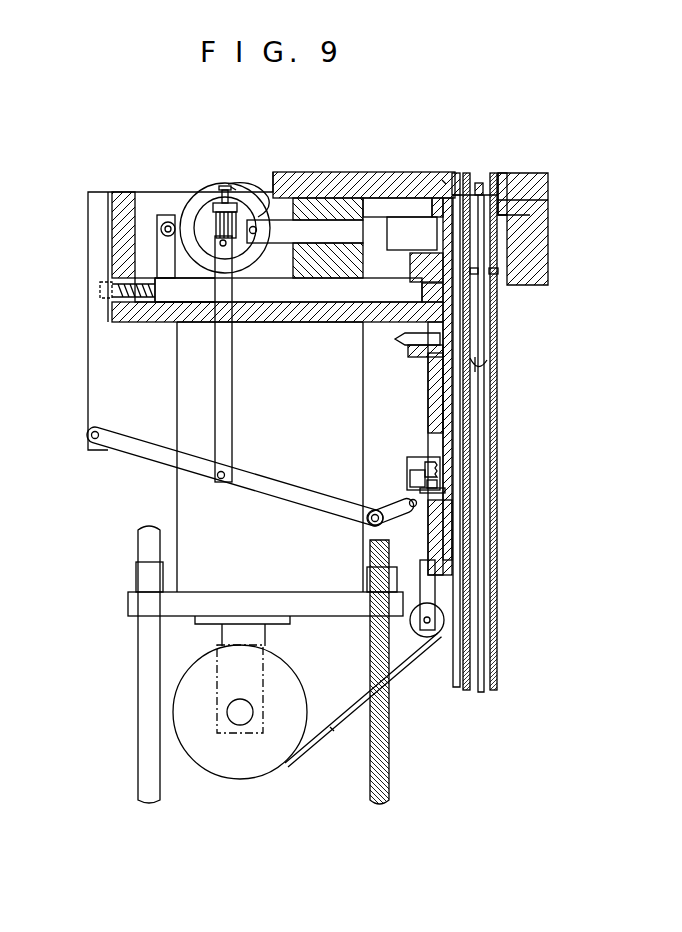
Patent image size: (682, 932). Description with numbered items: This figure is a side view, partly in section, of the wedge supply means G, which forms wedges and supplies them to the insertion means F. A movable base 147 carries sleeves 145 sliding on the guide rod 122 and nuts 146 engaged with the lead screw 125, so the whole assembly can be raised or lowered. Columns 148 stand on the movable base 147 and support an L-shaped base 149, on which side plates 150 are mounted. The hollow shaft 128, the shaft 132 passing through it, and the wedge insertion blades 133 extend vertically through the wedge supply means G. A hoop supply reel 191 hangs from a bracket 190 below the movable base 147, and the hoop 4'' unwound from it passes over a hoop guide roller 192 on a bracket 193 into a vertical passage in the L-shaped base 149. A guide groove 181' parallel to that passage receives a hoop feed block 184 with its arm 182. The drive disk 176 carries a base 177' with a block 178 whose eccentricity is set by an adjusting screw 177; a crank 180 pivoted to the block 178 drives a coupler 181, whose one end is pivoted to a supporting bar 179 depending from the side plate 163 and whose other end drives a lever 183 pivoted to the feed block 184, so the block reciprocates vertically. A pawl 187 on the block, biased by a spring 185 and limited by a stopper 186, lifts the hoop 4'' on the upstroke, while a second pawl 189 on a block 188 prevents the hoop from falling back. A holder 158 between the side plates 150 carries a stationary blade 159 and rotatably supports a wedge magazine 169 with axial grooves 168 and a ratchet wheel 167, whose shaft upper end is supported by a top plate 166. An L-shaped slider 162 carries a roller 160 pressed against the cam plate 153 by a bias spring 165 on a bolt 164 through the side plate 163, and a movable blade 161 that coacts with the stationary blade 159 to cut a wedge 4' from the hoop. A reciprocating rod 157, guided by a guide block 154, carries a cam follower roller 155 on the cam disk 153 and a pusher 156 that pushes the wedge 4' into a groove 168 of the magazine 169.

The guide rod 122 is at (143, 778).
The lead screw 125 is at (390, 773).
The hollow shaft 128 is at (492, 335).
The shaft 132 is at (487, 373).
The wedge insertion blade 133 is at (502, 304).
The sleeve 145 is at (140, 577).
The nut 146 is at (378, 580).
The movable base 147 is at (135, 600).
The column 148 is at (185, 492).
The L-shaped base 149 is at (305, 312).
The side plate 150 is at (150, 200).
The cam plate 153 is at (250, 190).
The guide block 154 is at (324, 195).
The cam follower roller 155 is at (257, 236).
The pusher 156 is at (397, 214).
The reciprocating rod 157 is at (352, 225).
The holder 158 is at (418, 270).
The stationary blade 159 is at (437, 246).
The roller 160 is at (170, 222).
The movable blade 161 is at (432, 293).
The L-shaped slider 162 is at (263, 312).
The side plate 163 is at (118, 210).
The bolt 164 is at (98, 290).
The bias spring 165 is at (150, 302).
The top plate 166 is at (428, 180).
The ratchet wheel 167 is at (505, 178).
The axial groove 168 is at (497, 173).
The wedge magazine 169 is at (488, 173).
The disk 176 is at (197, 212).
The adjusting screw 177 is at (211, 182).
The base 177' is at (236, 164).
The block 178 is at (213, 292).
The supporting bar 179 is at (97, 377).
The link or crank 180 is at (231, 405).
The coupler 181 is at (235, 476).
The guide groove 181' is at (489, 448).
The arm 182 is at (412, 512).
The lever 183 is at (395, 515).
The hoop feed block 184 is at (408, 467).
The spring 185 is at (425, 494).
The stopper 186 is at (432, 483).
The pawl 187 is at (428, 466).
The block 188 is at (420, 357).
The pawl 189 is at (400, 340).
The bracket 190 is at (268, 633).
The hoop supply reel 191 is at (270, 770).
The hoop guide roller 192 is at (430, 632).
The bracket 193 is at (416, 648).
The wedge 4' is at (453, 160).
The hoop 4'' is at (342, 741).
The insertion means F is at (500, 560).
The wedge supply means G is at (548, 228).